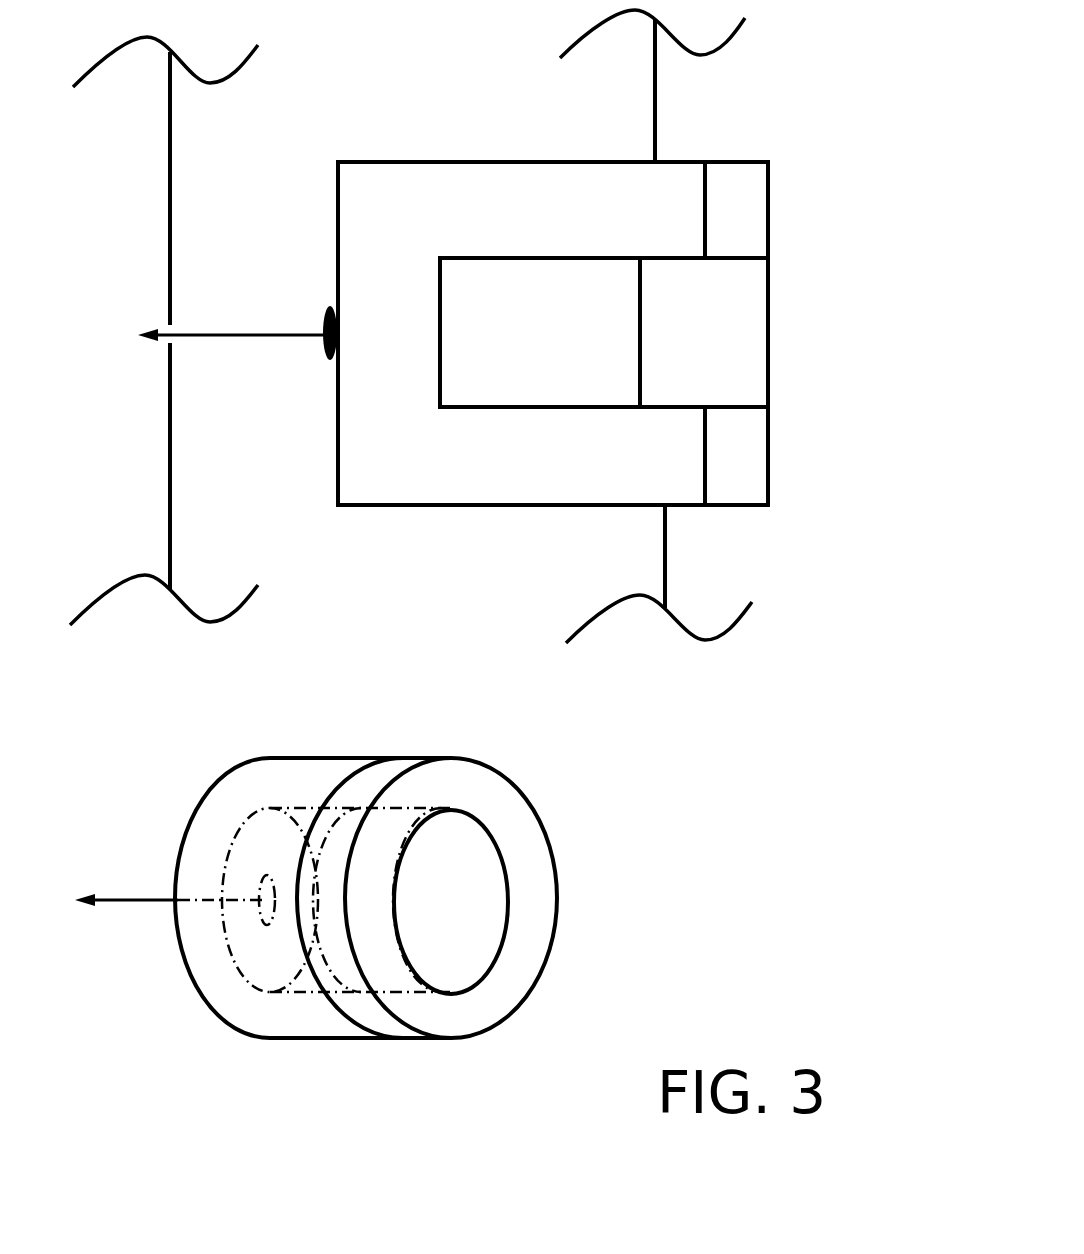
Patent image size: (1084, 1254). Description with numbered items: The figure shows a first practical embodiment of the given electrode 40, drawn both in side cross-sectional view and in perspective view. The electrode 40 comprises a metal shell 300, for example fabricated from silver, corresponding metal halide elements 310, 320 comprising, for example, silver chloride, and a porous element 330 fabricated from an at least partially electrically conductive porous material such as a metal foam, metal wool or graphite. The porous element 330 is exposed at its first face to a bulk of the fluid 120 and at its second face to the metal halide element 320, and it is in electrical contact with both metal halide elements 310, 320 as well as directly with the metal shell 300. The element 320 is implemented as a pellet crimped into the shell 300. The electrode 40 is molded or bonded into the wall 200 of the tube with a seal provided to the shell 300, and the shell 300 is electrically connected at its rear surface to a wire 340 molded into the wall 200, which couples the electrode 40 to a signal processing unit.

The electrode 40 is at (72, 422).
The fluid 120 is at (871, 332).
The wall 200 is at (258, 191).
The metal shell 300 is at (508, 219).
The metal halide element 310 is at (740, 168).
The metal halide element 320 is at (560, 331).
The porous element 330 is at (727, 332).
The wire 340 is at (277, 337).